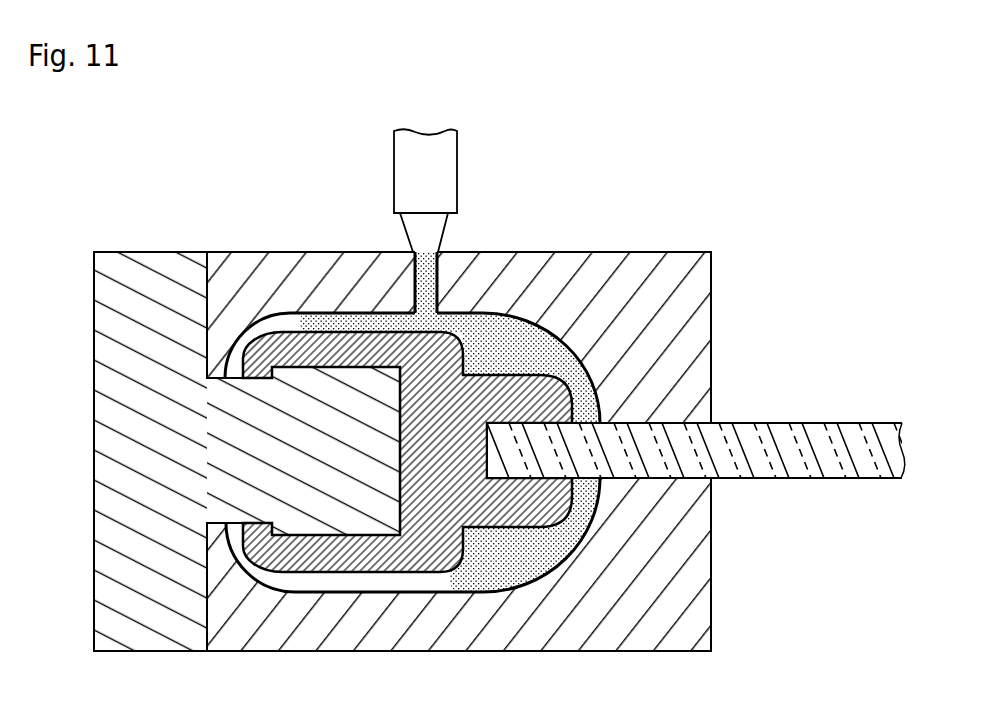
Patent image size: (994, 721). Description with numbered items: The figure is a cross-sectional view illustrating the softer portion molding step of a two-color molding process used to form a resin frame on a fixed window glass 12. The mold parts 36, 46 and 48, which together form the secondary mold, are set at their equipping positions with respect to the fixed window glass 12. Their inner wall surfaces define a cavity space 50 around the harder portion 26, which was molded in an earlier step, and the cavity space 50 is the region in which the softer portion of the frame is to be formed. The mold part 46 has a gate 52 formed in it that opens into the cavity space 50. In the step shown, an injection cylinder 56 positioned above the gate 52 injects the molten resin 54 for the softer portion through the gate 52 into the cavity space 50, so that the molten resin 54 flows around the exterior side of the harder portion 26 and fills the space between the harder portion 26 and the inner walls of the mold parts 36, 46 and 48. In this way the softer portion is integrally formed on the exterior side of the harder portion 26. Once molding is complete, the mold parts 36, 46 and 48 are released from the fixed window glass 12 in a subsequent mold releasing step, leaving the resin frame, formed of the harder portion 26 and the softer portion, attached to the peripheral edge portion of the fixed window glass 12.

The fixed window glass 12 is at (813, 423).
The harder portion 26 is at (322, 337).
The mold part 36 is at (152, 252).
The mold part 46 is at (577, 257).
The mold part 48 is at (453, 645).
The cavity space 50 is at (342, 585).
The gate 52 is at (428, 291).
The molten resin 54 is at (512, 355).
The injection cylinder 56 is at (453, 170).